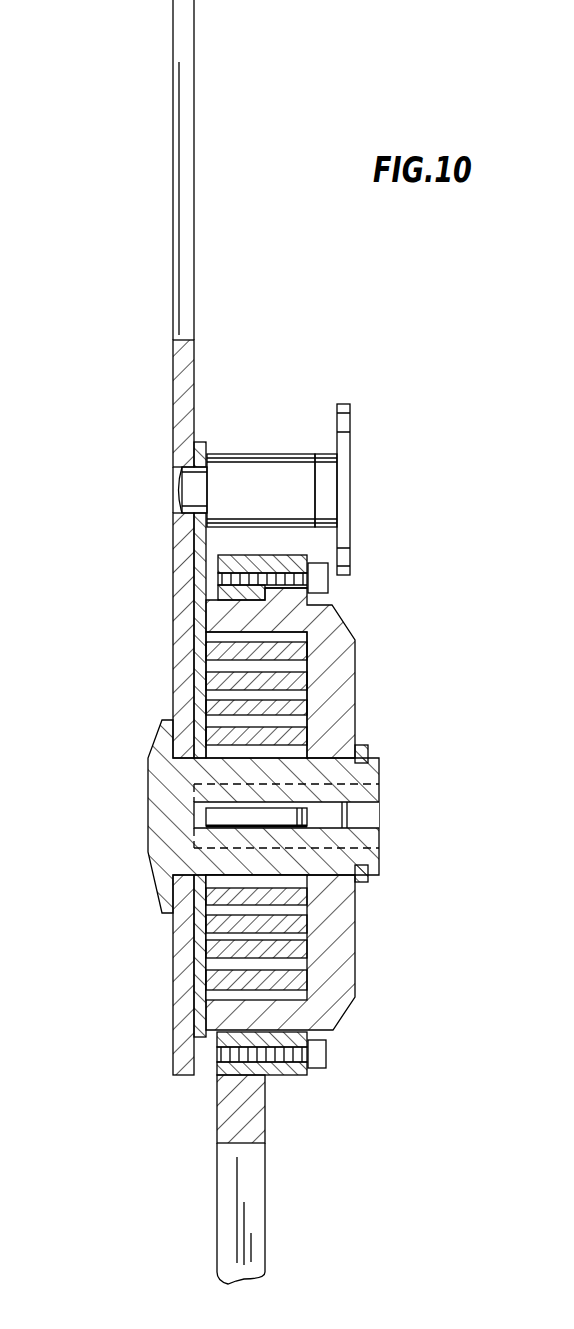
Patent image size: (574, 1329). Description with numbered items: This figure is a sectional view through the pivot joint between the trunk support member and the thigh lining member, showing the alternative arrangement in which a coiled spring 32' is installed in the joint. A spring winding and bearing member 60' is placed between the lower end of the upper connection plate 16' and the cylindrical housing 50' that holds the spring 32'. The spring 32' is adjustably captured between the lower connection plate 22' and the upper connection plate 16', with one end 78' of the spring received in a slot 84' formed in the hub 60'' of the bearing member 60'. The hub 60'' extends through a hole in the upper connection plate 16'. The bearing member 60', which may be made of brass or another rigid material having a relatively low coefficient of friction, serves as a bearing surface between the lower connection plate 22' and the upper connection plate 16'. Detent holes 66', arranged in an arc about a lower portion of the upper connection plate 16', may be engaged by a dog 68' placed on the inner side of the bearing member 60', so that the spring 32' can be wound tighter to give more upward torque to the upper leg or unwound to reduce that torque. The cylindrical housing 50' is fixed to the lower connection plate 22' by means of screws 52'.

The upper connection plate 16' is at (230, 170).
The lower connection plate 22' is at (280, 1179).
The spring 32' is at (328, 811).
The cylindrical housing 50' is at (319, 739).
The screws 52' is at (327, 806).
The spring winding and bearing member 60' is at (130, 707).
The hub 60'' is at (232, 821).
The detent holes 66' is at (218, 489).
The dog 68' is at (147, 488).
The one end of spring 78' is at (336, 781).
The slot 84' is at (330, 800).